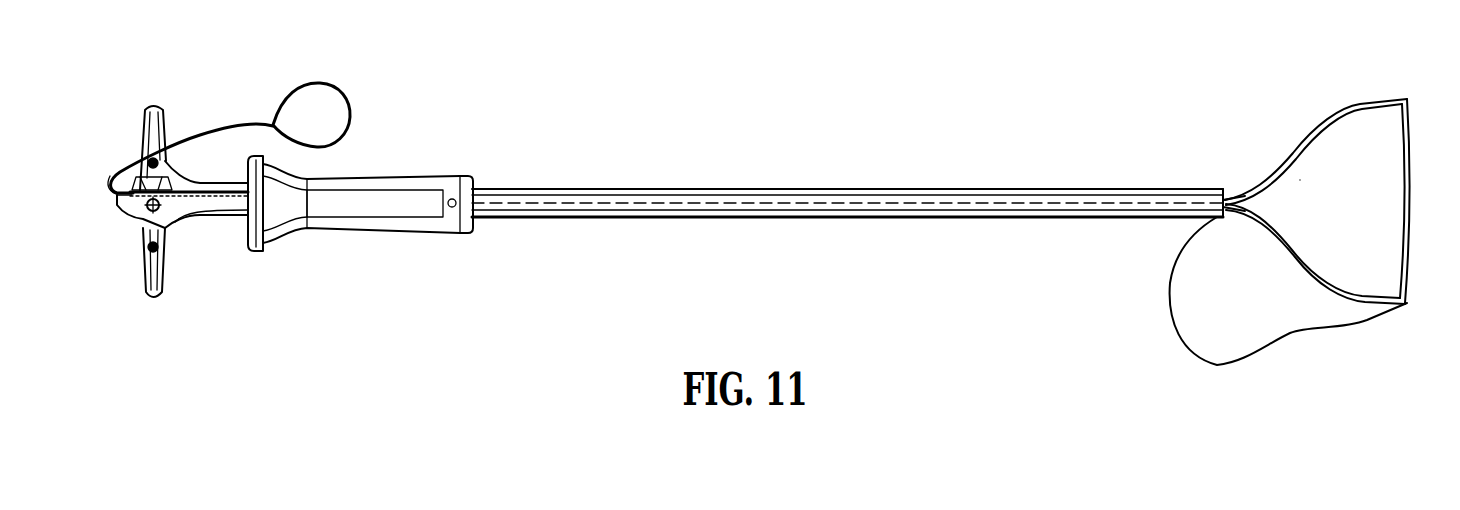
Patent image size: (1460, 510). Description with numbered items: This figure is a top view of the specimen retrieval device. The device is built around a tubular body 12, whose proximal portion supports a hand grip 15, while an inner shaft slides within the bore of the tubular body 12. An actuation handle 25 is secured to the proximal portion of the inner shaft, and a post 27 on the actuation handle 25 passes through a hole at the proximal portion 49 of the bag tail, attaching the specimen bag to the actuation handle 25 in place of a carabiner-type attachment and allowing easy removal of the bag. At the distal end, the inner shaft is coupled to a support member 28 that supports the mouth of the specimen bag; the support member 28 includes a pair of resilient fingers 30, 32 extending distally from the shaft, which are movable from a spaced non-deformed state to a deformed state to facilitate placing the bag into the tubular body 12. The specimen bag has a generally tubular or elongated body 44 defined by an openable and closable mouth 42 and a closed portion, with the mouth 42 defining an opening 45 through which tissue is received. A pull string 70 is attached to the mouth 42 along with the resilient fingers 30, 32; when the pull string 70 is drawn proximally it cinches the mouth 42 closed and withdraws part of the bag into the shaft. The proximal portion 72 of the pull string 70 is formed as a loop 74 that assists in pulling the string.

The tubular body 12 is at (597, 197).
The hand grip 15 is at (441, 181).
The actuation handle 25 is at (204, 210).
The post 27 is at (150, 208).
The support member 28 is at (1238, 192).
The resilient finger 30 is at (1360, 104).
The resilient finger 32 is at (1397, 310).
The openable and closable portion (mouth) 42 is at (1410, 233).
The body 44 is at (1247, 312).
The opening 45 is at (1350, 220).
The proximal portion of the tail 49 is at (127, 211).
The pull string 70 is at (108, 189).
The proximal portion of the pull string 72 is at (217, 129).
The loop 74 is at (317, 84).